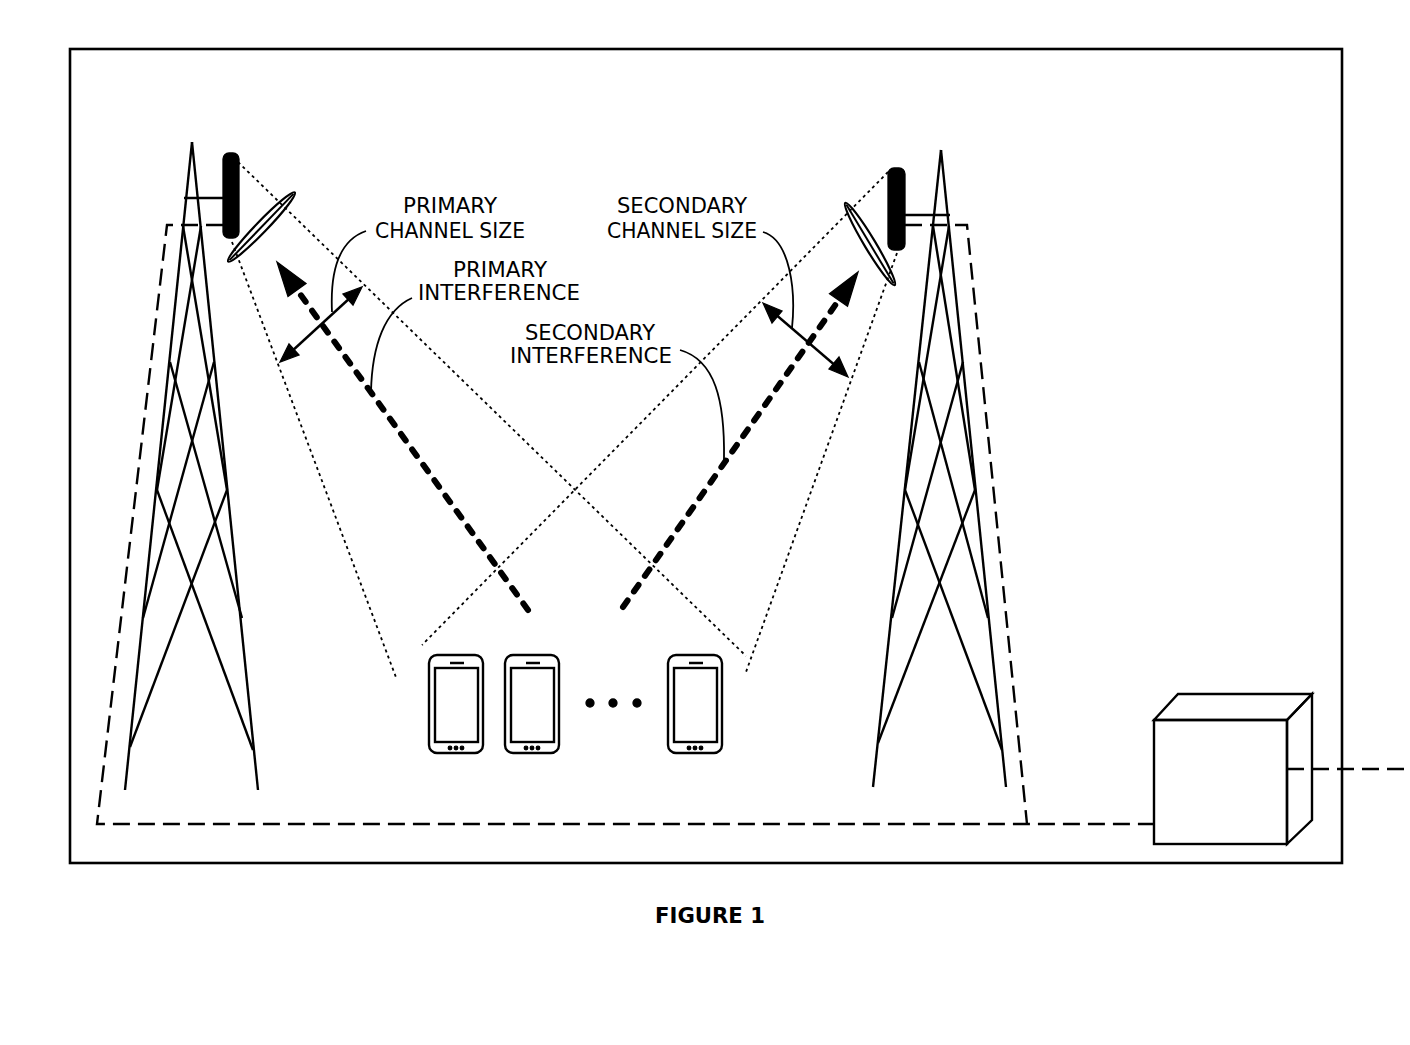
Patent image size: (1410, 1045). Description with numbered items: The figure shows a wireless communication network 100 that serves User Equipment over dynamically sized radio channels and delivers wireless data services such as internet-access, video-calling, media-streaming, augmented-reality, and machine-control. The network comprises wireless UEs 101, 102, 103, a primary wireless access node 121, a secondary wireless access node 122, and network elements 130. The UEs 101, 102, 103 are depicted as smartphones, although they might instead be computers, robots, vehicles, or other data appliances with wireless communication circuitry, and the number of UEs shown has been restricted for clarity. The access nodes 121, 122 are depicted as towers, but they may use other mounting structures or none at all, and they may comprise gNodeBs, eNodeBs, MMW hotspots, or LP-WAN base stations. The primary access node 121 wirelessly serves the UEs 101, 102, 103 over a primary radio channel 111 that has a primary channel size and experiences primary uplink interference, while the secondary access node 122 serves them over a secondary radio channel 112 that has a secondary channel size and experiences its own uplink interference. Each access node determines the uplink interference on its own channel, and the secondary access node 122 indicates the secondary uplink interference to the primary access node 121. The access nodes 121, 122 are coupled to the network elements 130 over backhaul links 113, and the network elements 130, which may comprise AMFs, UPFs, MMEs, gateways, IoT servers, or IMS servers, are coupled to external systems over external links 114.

The wireless communication network 100 is at (928, 79).
The User Equipment (UE) 101 is at (470, 705).
The User Equipment (UE) 102 is at (546, 705).
The User Equipment (UE) 103 is at (709, 705).
The primary radio channel 111 is at (293, 196).
The secondary radio channel 112 is at (850, 207).
The backhaul links 113 is at (1062, 824).
The external links 114 is at (1387, 769).
The primary wireless access node 121 is at (192, 150).
The secondary wireless access node 122 is at (941, 158).
The network elements 130 is at (1233, 769).